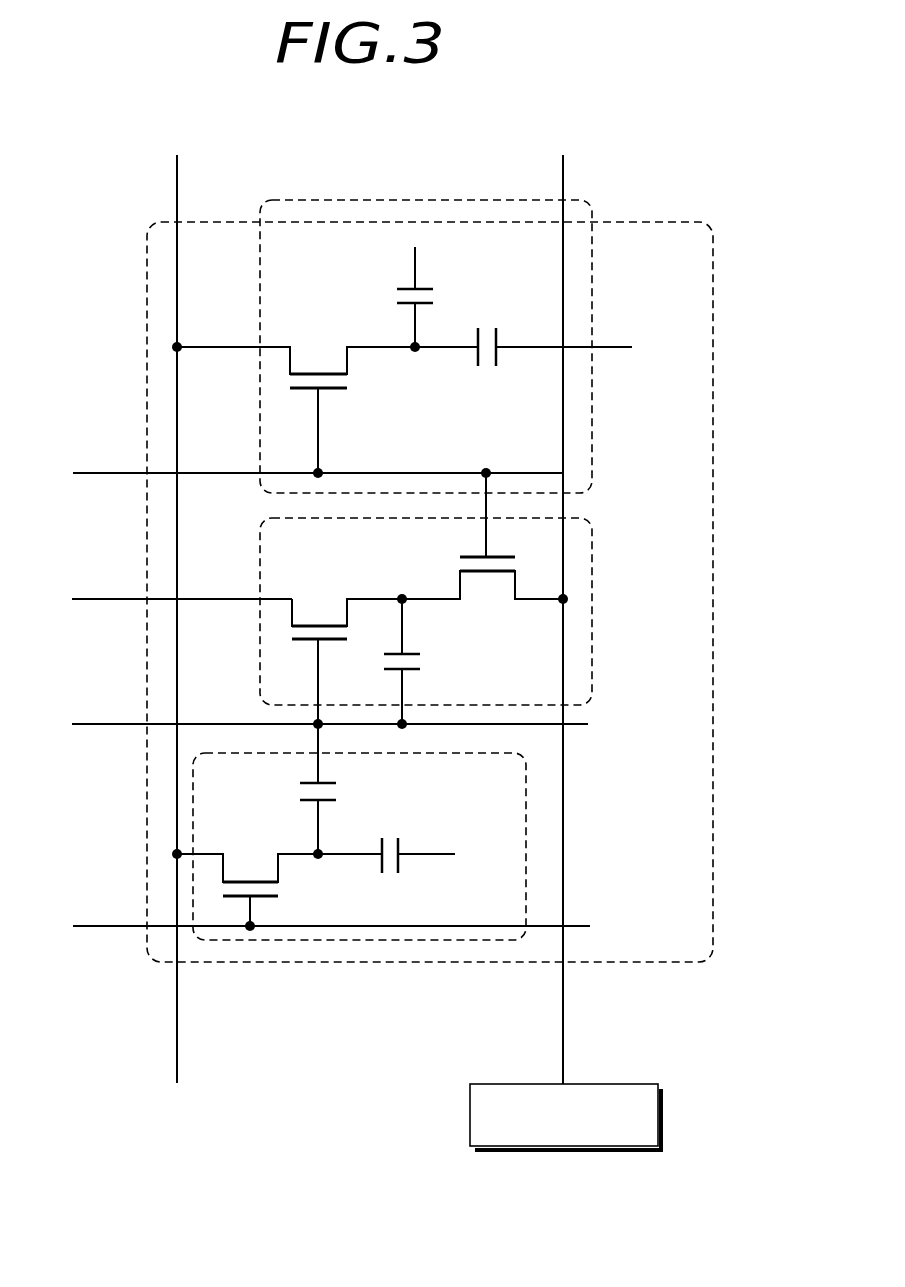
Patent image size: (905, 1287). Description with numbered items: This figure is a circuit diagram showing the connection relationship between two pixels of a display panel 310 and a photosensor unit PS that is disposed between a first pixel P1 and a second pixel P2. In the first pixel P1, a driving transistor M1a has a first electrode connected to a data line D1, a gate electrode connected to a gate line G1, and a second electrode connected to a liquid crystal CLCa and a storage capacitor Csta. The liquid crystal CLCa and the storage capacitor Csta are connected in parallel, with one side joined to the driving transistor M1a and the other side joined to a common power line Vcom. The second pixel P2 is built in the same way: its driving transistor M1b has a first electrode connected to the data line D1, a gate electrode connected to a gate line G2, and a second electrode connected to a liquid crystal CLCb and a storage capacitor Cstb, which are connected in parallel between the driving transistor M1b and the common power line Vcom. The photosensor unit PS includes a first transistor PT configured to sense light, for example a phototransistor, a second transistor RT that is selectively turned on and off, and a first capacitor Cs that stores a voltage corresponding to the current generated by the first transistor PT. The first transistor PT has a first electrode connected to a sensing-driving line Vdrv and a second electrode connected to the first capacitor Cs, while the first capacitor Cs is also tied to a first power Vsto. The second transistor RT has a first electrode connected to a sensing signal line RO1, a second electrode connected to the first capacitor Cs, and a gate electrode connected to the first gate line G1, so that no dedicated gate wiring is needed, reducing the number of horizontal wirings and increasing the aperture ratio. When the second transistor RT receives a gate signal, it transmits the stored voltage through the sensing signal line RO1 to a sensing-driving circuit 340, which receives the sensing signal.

The display panel 310 is at (666, 222).
The sensing-driving circuit 340 is at (662, 1118).
The data line D1 is at (179, 601).
The sensing signal line RO1 is at (566, 602).
The first pixel P1 is at (338, 200).
The second pixel P2 is at (526, 815).
The photosensor unit PS is at (592, 580).
The driving transistor M1a is at (296, 396).
The driving transistor M1b is at (247, 877).
The first transistor PT is at (347, 648).
The second transistor RT is at (482, 549).
The storage capacitor Csta is at (441, 314).
The storage capacitor Cstb is at (349, 789).
The liquid crystal CLCa is at (463, 369).
The liquid crystal CLCb is at (368, 870).
The first capacitor Cs is at (419, 664).
The gate line G1 is at (302, 473).
The gate line G2 is at (310, 926).
The sensing-driving line Vdrv is at (155, 600).
The first power Vsto is at (303, 725).
The common power line Vcom is at (543, 544).